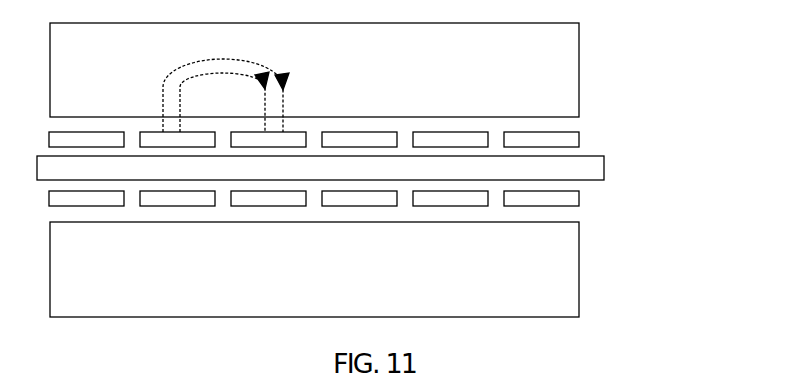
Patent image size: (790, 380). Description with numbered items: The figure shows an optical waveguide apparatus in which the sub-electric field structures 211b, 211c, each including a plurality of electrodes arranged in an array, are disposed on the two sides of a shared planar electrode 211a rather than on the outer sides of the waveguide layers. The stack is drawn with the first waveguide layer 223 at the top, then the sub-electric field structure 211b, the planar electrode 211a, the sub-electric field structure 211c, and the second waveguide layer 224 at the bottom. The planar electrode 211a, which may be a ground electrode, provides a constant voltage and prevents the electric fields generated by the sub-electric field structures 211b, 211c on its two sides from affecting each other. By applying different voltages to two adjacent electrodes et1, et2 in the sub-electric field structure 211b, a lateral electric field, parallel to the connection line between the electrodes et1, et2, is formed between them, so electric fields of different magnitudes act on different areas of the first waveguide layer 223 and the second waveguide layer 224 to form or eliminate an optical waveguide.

The first waveguide layer 223 is at (588, 70).
The second waveguide layer 224 is at (588, 273).
The planar electrode 211a is at (613, 173).
The sub-electric field structure 211b is at (367, 116).
The sub-electric field structure 211c is at (588, 204).
The electrode et1 is at (137, 124).
The electrode et2 is at (315, 130).